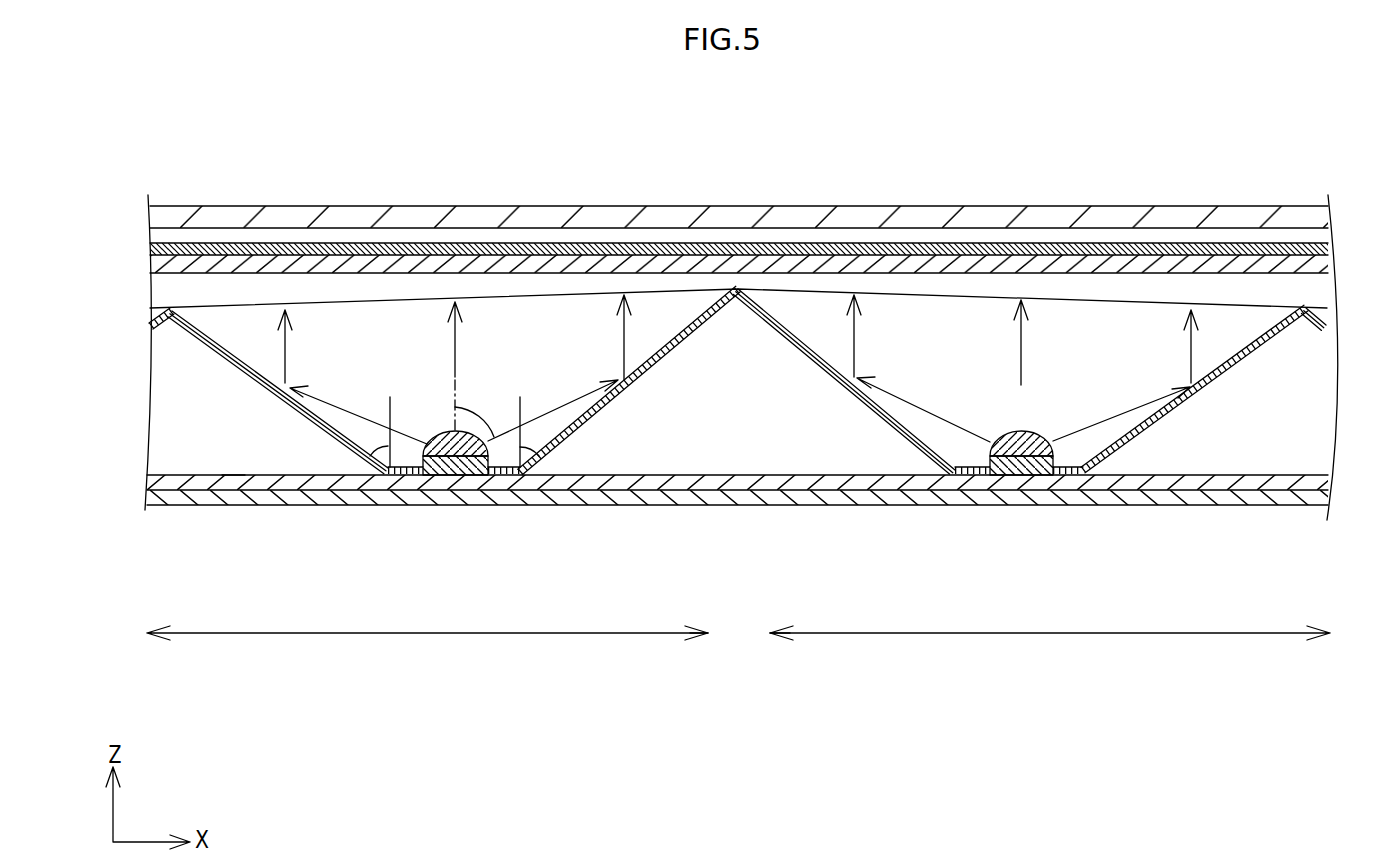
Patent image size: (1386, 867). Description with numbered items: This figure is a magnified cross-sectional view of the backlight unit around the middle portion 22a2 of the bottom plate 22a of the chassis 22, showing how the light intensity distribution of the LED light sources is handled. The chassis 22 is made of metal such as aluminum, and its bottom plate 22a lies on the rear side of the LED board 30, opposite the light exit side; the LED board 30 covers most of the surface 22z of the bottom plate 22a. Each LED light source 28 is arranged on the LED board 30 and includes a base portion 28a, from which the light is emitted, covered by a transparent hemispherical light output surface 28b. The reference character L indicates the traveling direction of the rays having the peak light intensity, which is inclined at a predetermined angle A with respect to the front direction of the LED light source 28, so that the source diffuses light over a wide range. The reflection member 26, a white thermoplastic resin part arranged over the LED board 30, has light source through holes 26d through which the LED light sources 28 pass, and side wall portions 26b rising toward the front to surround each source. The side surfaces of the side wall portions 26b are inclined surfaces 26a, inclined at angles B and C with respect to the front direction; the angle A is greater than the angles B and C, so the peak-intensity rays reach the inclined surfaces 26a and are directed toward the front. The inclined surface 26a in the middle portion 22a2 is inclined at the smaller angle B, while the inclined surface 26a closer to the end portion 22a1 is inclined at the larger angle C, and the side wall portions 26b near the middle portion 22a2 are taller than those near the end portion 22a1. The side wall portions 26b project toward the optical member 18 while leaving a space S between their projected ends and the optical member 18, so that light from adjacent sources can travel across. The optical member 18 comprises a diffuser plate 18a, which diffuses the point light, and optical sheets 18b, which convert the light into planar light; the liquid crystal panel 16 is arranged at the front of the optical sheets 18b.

The liquid crystal panel 16 is at (1223, 207).
The optical member 18 is at (739, 179).
The diffuser plate 18a is at (845, 263).
The optical sheets 18b is at (895, 250).
The space S is at (1116, 292).
The reflection member 26 is at (759, 432).
The inclined surfaces 26a is at (1167, 410).
The side wall portions 26b is at (765, 320).
The light source through holes 26d is at (405, 477).
The LED light source 28 is at (758, 517).
The base portion 28a is at (467, 466).
The light output surface 28b is at (443, 458).
The LED board 30 is at (808, 482).
The chassis 22 is at (740, 575).
The bottom plate 22a is at (640, 505).
The end portion 22a1 is at (740, 651).
The middle portion 22a2 is at (735, 654).
The surface of the bottom plate 22z is at (232, 481).
The traveling direction of peak-intensity light L is at (328, 407).
The angle A is at (474, 411).
The angle B is at (532, 432).
The angle C is at (375, 432).